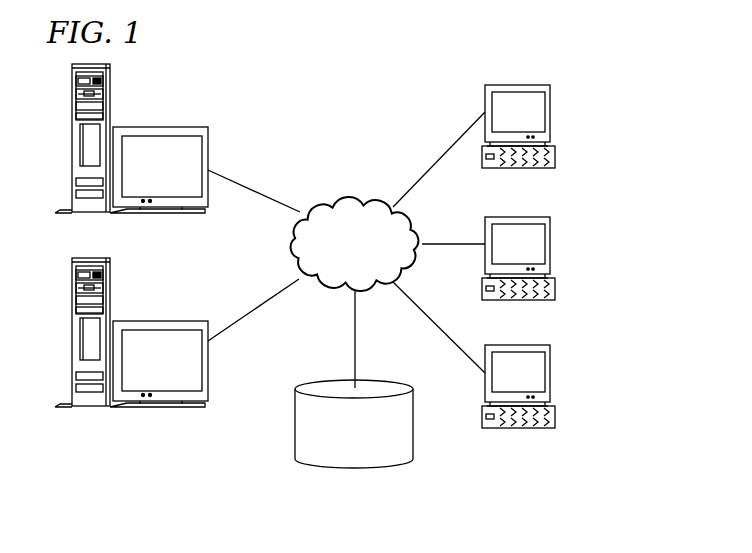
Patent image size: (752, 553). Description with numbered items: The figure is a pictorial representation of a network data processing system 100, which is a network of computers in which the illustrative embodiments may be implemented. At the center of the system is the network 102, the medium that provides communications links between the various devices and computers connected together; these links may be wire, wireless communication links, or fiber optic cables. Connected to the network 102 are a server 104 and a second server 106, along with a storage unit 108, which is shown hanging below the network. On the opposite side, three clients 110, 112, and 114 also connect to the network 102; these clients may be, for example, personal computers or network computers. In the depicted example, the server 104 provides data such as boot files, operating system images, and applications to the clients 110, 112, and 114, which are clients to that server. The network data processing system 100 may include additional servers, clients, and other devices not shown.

The network data processing system 100 is at (399, 96).
The network 102 is at (330, 200).
The server 104 is at (72, 141).
The server 106 is at (72, 337).
The storage unit 108 is at (338, 468).
The client 110 is at (552, 113).
The client 112 is at (552, 245).
The client 114 is at (552, 374).